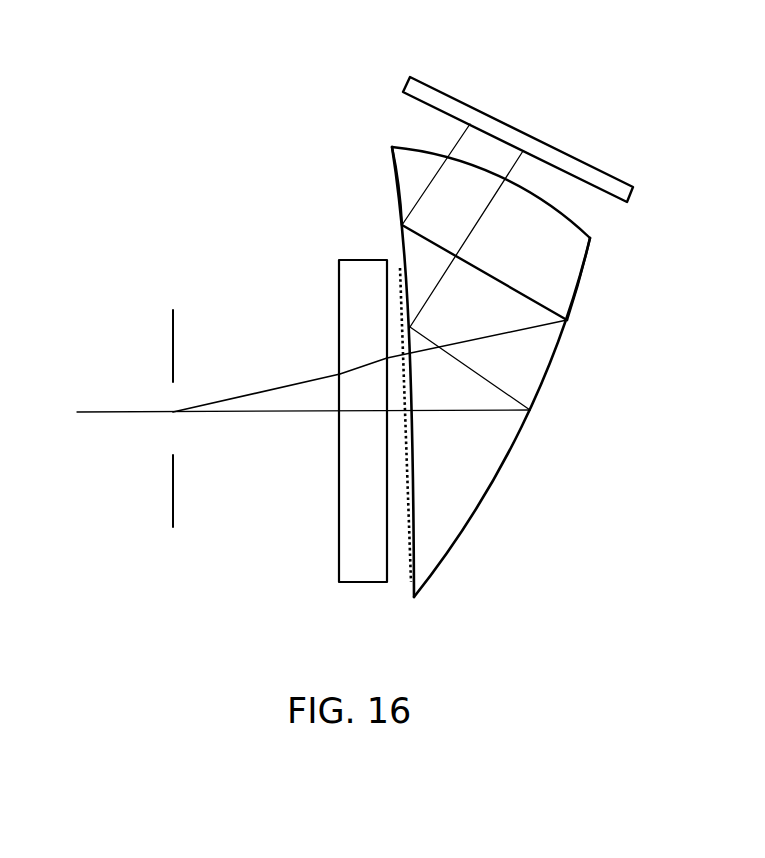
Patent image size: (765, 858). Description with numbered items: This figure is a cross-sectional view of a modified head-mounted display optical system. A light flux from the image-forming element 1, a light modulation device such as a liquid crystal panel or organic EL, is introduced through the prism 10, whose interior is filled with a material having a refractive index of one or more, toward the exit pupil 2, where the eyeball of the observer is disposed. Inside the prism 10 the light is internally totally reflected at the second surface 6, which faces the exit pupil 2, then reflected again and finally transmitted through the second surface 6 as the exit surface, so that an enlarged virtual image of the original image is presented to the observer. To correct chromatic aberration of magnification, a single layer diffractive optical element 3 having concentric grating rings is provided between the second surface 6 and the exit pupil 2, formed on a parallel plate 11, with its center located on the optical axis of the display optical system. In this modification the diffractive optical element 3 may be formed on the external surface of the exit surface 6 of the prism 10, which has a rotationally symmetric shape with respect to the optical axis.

The image-forming element 1 is at (435, 85).
The exit pupil 2 is at (167, 338).
The diffractive optical element 3 is at (396, 295).
The second surface 6 is at (397, 193).
The prism 10 is at (487, 448).
The parallel plate 11 is at (362, 572).